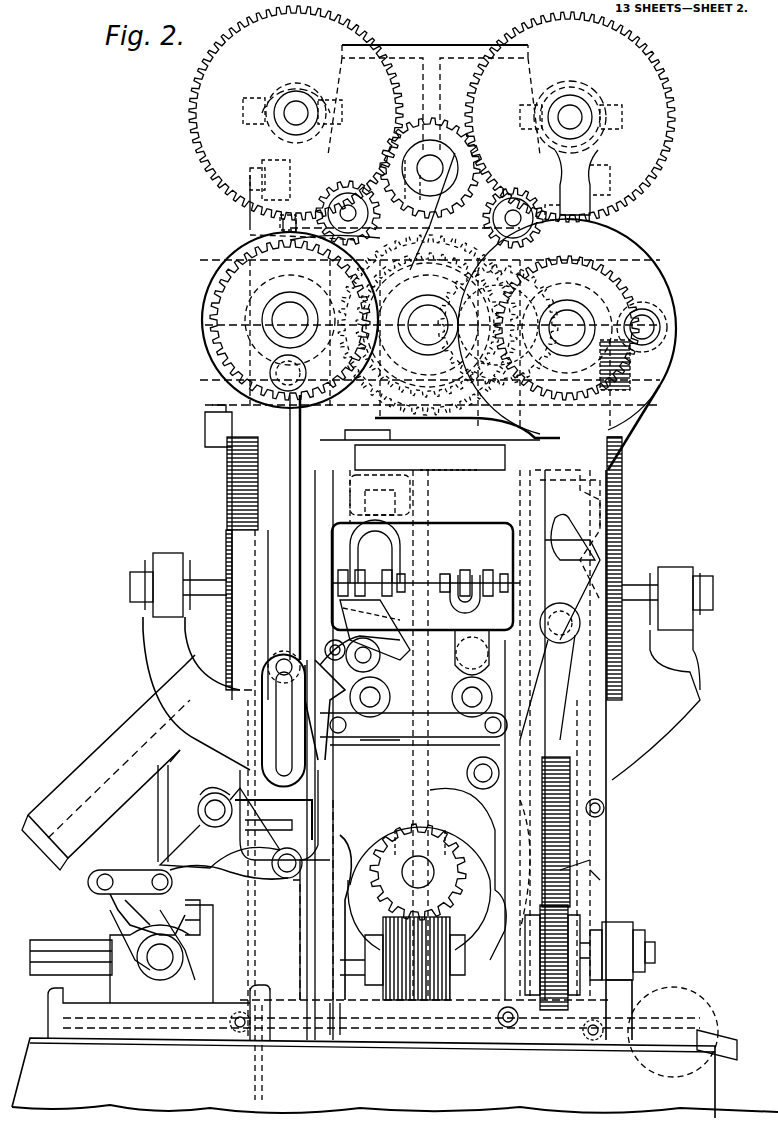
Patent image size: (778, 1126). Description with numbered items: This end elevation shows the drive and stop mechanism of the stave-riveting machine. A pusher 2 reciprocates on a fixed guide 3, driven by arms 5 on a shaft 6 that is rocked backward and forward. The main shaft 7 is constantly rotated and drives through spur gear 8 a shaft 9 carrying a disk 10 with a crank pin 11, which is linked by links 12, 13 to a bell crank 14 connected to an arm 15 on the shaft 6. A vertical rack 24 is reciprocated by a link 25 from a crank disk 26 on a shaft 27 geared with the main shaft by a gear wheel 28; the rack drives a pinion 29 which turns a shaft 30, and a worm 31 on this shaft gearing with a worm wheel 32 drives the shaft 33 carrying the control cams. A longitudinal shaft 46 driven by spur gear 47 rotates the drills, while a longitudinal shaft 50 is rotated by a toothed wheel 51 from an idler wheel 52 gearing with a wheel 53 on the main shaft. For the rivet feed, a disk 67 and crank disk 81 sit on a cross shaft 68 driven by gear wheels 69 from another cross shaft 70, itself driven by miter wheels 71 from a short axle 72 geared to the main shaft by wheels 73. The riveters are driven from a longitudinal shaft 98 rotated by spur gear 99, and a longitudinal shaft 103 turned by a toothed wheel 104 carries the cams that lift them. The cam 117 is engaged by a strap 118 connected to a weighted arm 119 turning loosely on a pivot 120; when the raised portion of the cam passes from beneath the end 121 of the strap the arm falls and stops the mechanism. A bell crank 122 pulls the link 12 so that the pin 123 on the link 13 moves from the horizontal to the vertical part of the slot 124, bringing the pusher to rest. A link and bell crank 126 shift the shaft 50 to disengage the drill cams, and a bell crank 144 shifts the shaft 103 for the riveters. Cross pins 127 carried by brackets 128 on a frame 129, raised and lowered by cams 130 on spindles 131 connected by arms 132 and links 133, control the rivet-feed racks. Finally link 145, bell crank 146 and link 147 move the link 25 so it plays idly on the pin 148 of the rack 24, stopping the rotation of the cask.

The pusher 2 is at (45, 844).
The fixed guide 3 is at (102, 758).
The arm 5 is at (45, 940).
The shaft 6 is at (161, 951).
The main shaft 7 is at (428, 325).
The spur gear 8 is at (212, 320).
The shaft 9 is at (290, 320).
The disk 10 is at (205, 282).
The crank pin 11 is at (282, 376).
The link 12 is at (286, 649).
The link 13 is at (297, 812).
The bell crank 14 is at (203, 815).
The arm 15 is at (115, 912).
The vertical rack 24 is at (560, 866).
The link 25 is at (600, 550).
The crank disk 26 is at (668, 318).
The shaft 27 is at (567, 328).
The gear wheel 28 is at (628, 290).
The pinion 29 is at (575, 920).
The shaft 30 is at (655, 952).
The worm 31 is at (450, 1035).
The worm wheel 32 is at (405, 820).
The shaft 33 is at (418, 872).
The longitudinal shaft 46 is at (345, 214).
The spur gear 47 is at (300, 240).
The longitudinal shaft 50 is at (292, 116).
The toothed wheel 51 is at (196, 82).
The idler wheel 52 is at (440, 125).
The wheel 53 is at (520, 248).
The disk 67 is at (530, 505).
The cross shaft 68 is at (140, 592).
The gear wheels 69 is at (228, 497).
The cross shaft 70 is at (212, 437).
The miter wheels 71 is at (432, 494).
The short axle 72 is at (422, 566).
The wheels 73 is at (505, 300).
The crank disk 81 is at (430, 446).
The longitudinal shaft 98 is at (516, 218).
The spur gear 99 is at (458, 160).
The longitudinal shaft 103 is at (573, 115).
The toothed wheel 104 is at (650, 55).
The cam 117 is at (384, 818).
The strap 118 is at (465, 840).
The weighted arm 119 is at (290, 1035).
The pivot 120 is at (405, 1035).
The end of strap 121 is at (340, 844).
The bell crank 122 is at (593, 1042).
The pin 123 is at (280, 662).
The slot 124 is at (260, 760).
The link and bell crank 126 is at (262, 232).
The cross pins 127 is at (380, 560).
The brackets 128 is at (458, 650).
The frame 129 is at (370, 630).
The cams 130 is at (452, 693).
The spindles 131 is at (470, 705).
The arms 132 is at (375, 715).
The links 133 is at (622, 892).
The bell crank 144 is at (595, 155).
The link 145 is at (215, 883).
The bell crank 146 is at (345, 645).
The link 147 is at (430, 575).
The pin 148 is at (565, 628).